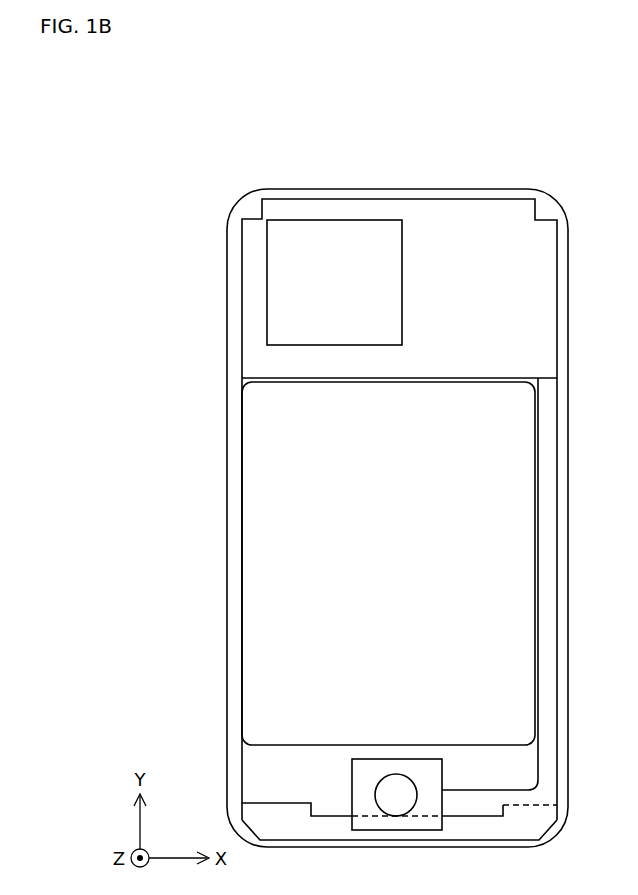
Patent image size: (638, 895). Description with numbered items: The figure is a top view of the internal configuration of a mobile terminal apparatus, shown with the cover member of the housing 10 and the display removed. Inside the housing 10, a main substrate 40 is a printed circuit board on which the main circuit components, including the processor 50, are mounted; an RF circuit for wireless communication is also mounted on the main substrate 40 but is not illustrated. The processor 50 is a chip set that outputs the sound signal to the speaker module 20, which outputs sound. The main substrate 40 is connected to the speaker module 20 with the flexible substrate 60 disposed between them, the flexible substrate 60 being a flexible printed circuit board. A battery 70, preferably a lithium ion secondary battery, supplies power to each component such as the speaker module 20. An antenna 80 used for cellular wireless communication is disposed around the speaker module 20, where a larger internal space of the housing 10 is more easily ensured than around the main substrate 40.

The housing 10 is at (570, 293).
The speaker module 20 is at (352, 793).
The main substrate 40 is at (300, 200).
The processor 50 is at (343, 220).
The flexible substrate 60 is at (557, 612).
The battery 70 is at (242, 502).
The antenna 80 is at (549, 834).